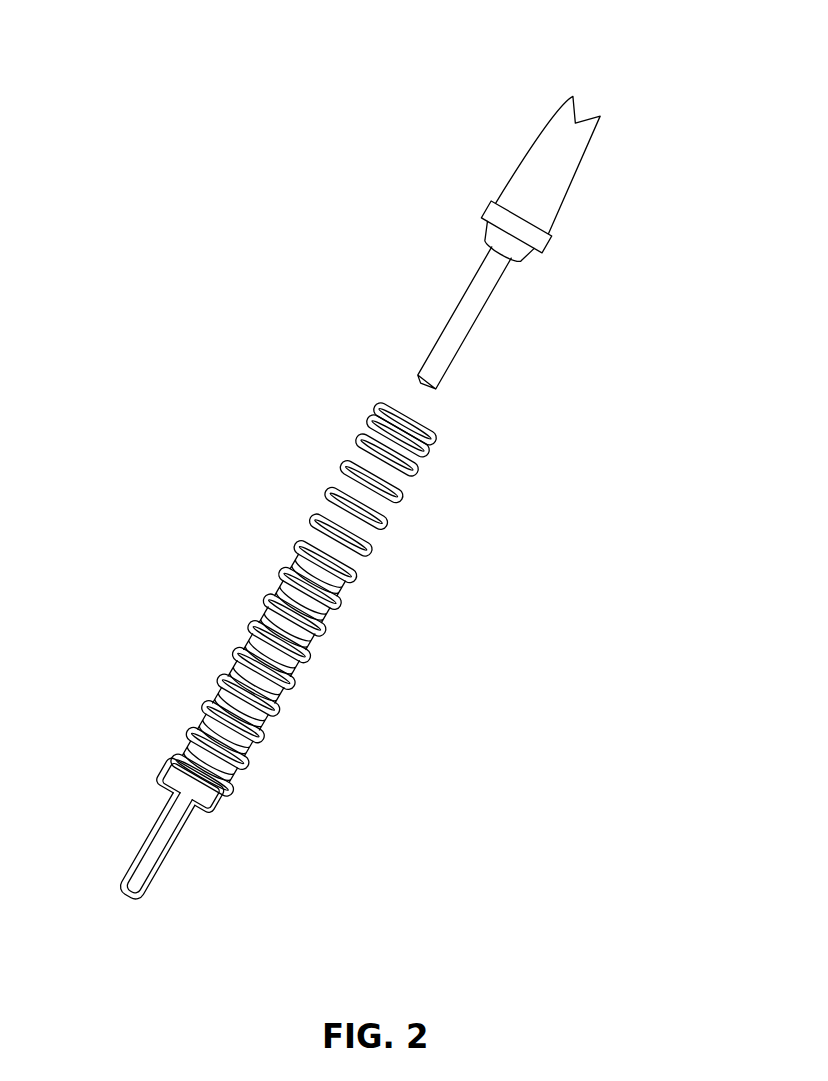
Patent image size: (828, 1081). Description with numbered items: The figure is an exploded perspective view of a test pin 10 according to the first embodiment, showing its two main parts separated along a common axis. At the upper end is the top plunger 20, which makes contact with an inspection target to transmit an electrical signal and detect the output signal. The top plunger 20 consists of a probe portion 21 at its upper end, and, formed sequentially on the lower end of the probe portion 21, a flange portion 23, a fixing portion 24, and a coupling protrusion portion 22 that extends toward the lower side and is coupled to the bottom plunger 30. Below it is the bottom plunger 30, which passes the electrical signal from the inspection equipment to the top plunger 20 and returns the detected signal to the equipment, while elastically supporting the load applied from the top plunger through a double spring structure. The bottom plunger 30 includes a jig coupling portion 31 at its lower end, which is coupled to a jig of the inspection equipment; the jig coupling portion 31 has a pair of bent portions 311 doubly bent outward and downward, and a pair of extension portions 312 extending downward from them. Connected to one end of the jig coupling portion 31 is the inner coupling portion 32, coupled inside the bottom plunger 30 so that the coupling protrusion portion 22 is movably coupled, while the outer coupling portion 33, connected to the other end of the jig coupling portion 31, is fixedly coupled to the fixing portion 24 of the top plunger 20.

The test pin 10 is at (676, 78).
The top plunger 20 is at (497, 150).
The probe portion 21 is at (564, 195).
The coupling protrusion portion 22 is at (489, 304).
The flange portion 23 is at (490, 206).
The fixing portion 24 is at (530, 255).
The bottom plunger 30 is at (175, 694).
The jig coupling portion 31 is at (223, 851).
The bent portions 311 is at (222, 812).
The extension portions 312 is at (184, 853).
The inner coupling portion 32 is at (284, 680).
The outer coupling portion 33 is at (411, 487).